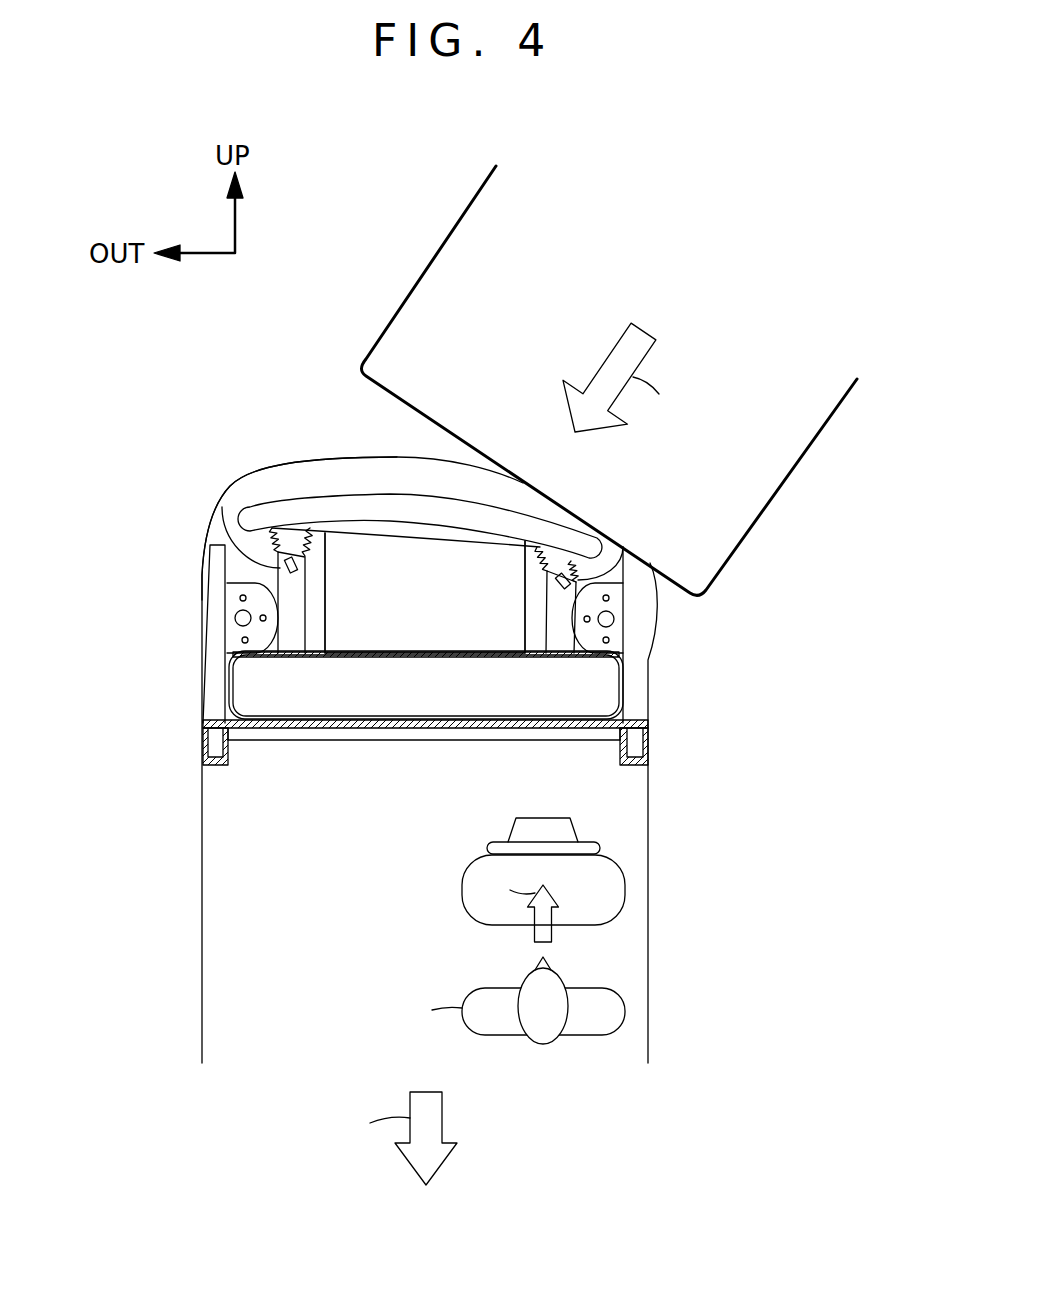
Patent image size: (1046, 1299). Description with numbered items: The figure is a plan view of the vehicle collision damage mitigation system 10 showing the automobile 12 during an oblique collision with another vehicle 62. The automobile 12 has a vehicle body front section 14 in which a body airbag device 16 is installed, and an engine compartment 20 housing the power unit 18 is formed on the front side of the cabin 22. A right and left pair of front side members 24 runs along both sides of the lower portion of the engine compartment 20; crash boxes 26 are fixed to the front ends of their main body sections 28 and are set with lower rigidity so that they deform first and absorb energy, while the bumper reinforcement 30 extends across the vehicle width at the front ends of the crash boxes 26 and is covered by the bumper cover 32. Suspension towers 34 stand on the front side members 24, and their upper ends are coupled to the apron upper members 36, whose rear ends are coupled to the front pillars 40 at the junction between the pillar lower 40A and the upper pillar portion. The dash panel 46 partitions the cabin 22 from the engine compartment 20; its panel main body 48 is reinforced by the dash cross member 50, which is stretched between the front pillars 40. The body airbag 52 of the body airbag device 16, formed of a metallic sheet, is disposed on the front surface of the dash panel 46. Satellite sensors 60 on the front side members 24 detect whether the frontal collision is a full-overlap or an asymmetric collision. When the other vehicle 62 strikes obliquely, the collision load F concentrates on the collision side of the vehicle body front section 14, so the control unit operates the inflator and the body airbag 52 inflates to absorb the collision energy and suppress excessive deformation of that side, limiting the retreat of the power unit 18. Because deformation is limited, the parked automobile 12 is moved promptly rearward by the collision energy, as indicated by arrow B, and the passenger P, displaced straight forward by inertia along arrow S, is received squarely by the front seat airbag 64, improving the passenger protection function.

The vehicle collision damage mitigation system 10 is at (468, 675).
The automobile 12 is at (698, 855).
The vehicle body front section 14 is at (735, 655).
The body airbag device 16 is at (408, 637).
The power unit 18 is at (459, 539).
The engine compartment 20 is at (419, 531).
The cabin 22 is at (342, 961).
The front side members 24 is at (223, 507).
The crash boxes 26 is at (290, 540).
The main body sections 28 is at (295, 595).
The bumper reinforcement 30 is at (393, 502).
The bumper cover 32 is at (340, 457).
The suspension towers 34 is at (233, 597).
The apron upper members 36 is at (213, 650).
The front pillars 40 is at (203, 743).
The pillar lower 40A is at (429, 746).
The dash panel 46 is at (320, 745).
The panel main body 48 is at (390, 729).
The dash cross member 50 is at (478, 745).
The body airbag 52 is at (450, 650).
The satellite sensors 60 is at (300, 561).
The other vehicle 62 is at (448, 231).
The front seat airbag 64 is at (462, 895).